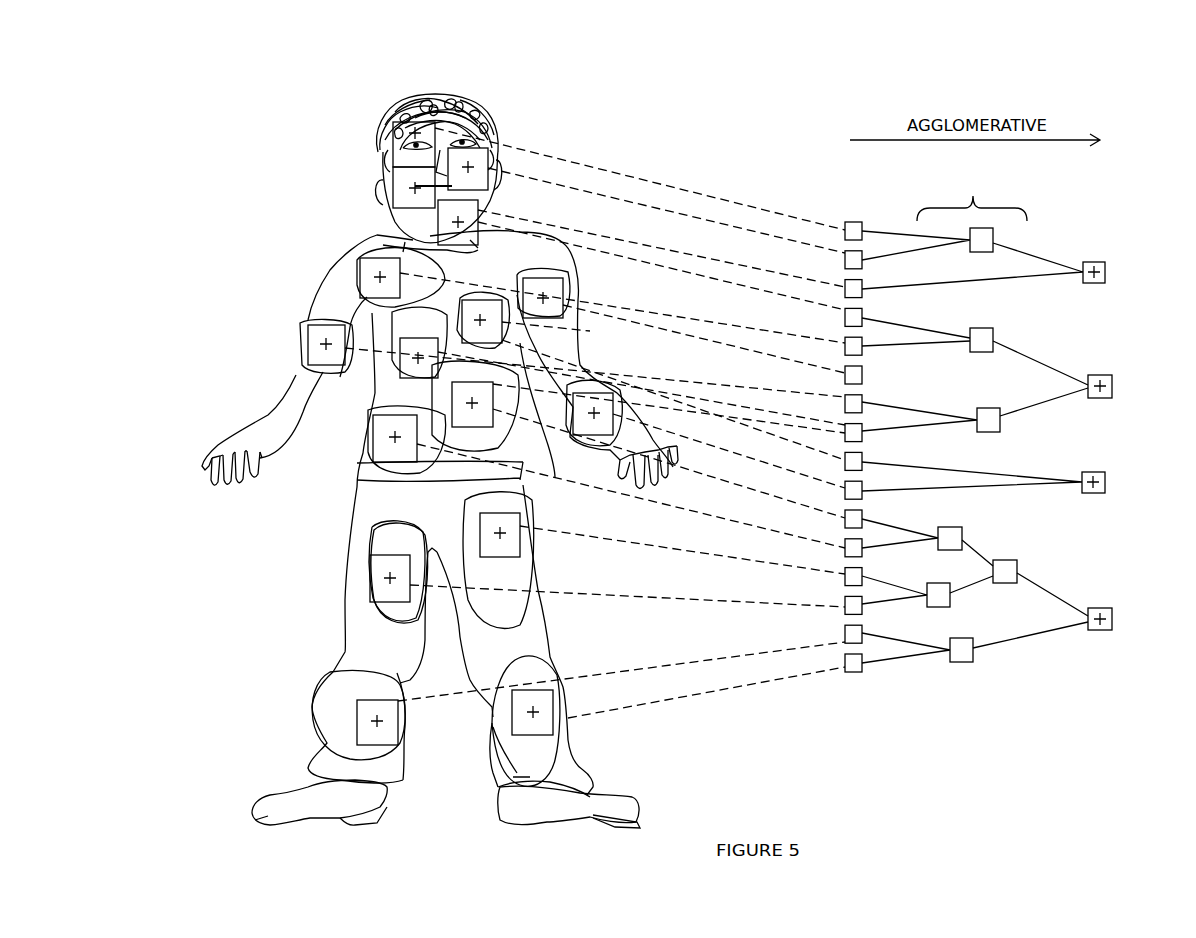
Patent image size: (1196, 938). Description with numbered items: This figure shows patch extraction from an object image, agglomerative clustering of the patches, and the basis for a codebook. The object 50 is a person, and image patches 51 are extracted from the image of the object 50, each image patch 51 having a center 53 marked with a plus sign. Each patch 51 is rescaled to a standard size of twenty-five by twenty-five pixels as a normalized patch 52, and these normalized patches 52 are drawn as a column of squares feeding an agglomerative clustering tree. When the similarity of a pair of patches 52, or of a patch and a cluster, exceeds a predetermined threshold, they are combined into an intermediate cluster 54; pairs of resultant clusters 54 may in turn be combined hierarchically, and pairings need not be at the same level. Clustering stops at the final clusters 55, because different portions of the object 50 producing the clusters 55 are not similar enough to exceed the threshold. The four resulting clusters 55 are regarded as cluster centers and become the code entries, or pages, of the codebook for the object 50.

The object 50 is at (509, 77).
The image patches 51 is at (381, 533).
The normalized patch 52 is at (377, 567).
The centers 53 is at (388, 577).
The cluster 54 is at (974, 193).
The cluster 55 is at (1097, 262).